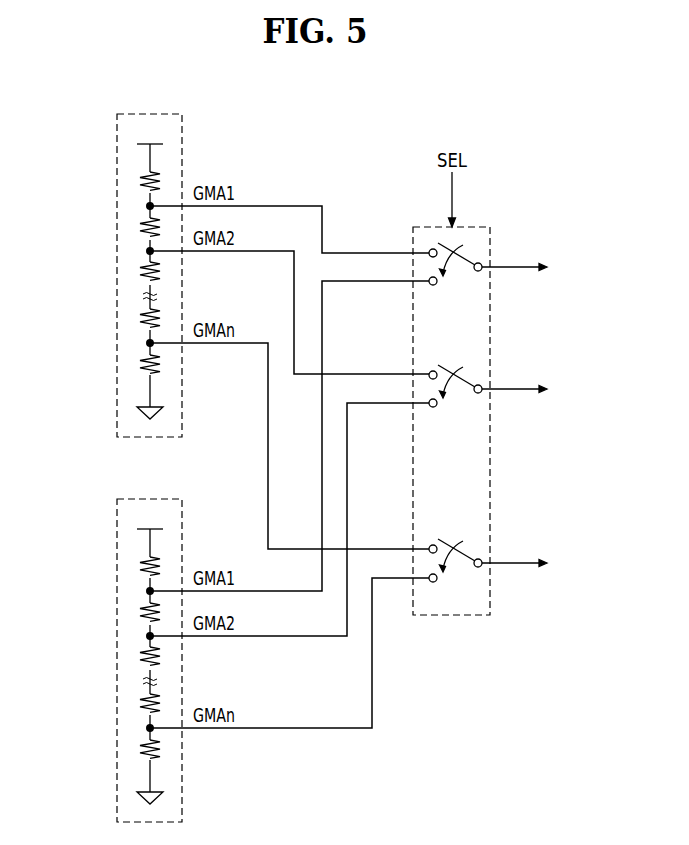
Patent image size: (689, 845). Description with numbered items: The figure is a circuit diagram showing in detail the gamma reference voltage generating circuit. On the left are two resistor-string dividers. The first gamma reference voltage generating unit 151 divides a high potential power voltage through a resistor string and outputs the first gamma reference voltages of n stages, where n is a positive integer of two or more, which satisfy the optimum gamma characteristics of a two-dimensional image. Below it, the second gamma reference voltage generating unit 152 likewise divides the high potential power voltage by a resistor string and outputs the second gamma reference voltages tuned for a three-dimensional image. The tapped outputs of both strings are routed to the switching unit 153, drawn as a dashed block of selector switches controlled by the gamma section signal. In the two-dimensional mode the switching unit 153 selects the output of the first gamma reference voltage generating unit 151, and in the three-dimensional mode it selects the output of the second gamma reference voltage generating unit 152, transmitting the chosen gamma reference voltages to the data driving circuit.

The first gamma reference voltage generating unit 151 is at (117, 275).
The second gamma reference voltage generating unit 152 is at (117, 660).
The switching unit 153 is at (452, 615).